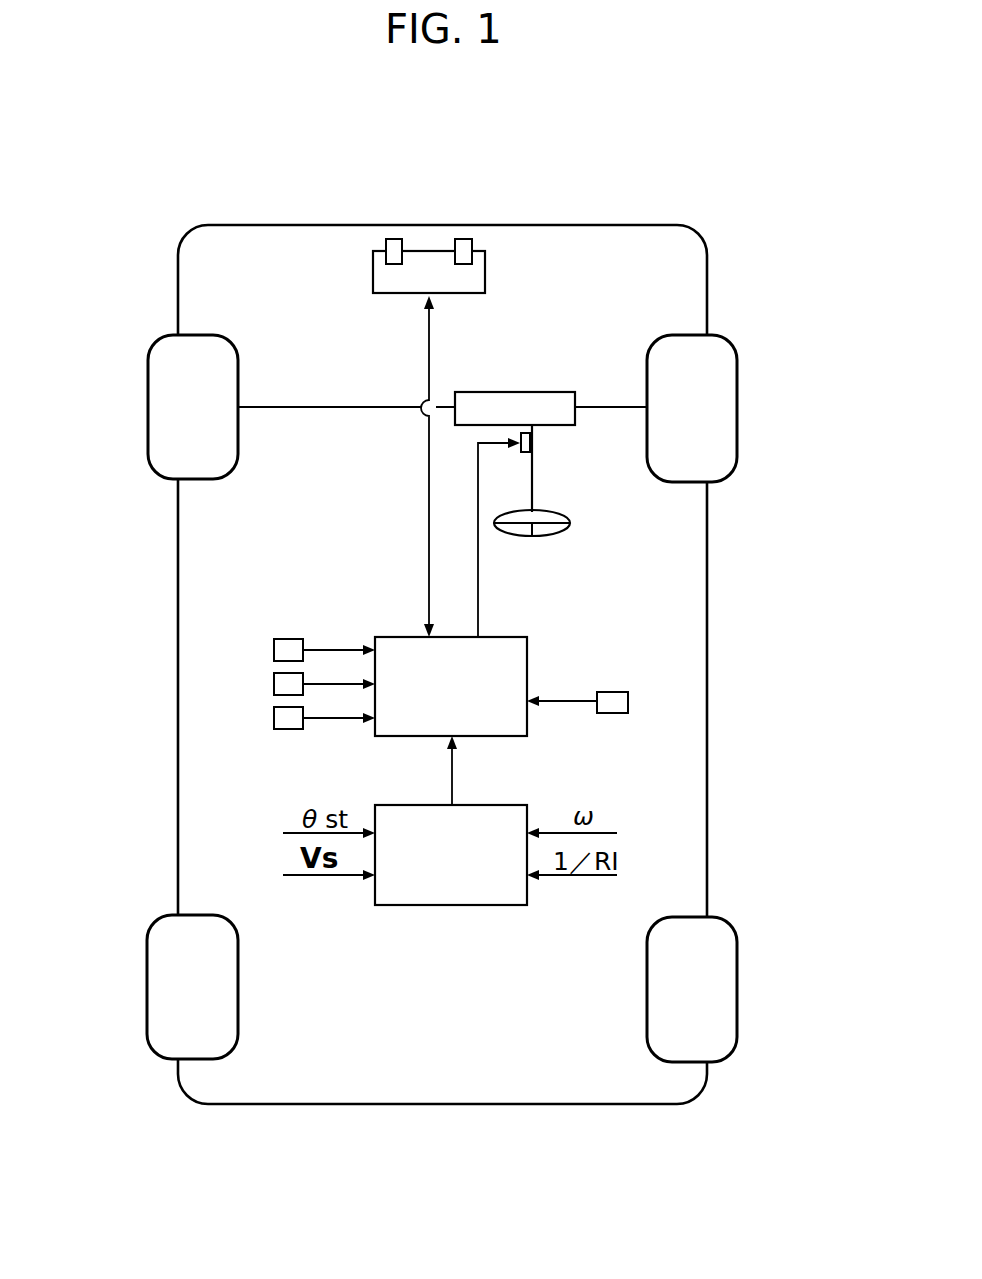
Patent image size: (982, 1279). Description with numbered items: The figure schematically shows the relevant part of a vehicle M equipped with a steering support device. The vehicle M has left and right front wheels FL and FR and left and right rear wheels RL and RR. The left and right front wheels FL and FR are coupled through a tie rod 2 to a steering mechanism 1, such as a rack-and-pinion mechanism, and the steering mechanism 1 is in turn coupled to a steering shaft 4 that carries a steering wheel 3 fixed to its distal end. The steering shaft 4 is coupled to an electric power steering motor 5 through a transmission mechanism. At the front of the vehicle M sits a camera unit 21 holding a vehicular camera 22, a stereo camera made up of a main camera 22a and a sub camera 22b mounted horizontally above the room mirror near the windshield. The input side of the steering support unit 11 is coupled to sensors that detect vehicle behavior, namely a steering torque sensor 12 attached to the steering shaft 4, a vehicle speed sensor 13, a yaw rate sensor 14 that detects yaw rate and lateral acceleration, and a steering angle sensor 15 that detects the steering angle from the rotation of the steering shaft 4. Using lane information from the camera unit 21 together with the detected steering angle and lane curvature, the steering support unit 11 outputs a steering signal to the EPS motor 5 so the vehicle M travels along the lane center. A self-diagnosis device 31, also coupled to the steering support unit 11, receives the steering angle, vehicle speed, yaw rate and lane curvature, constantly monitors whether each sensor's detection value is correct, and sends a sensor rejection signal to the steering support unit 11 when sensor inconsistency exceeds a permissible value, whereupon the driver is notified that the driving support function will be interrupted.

The steering mechanism 1 is at (517, 392).
The tie rod 2 is at (308, 405).
The steering wheel 3 is at (538, 537).
The steering shaft 4 is at (530, 485).
The electric power steering (EPS) motor 5 is at (531, 445).
The steering support unit 11 is at (390, 737).
The steering torque sensor 12 is at (274, 650).
The vehicle speed sensor 13 is at (274, 684).
The yaw rate sensor 14 is at (274, 718).
The steering angle sensor 15 is at (628, 701).
The camera unit 21 is at (373, 272).
The vehicular camera 22 is at (426, 193).
The main camera 22a is at (462, 238).
The sub camera 22b is at (393, 238).
The self-diagnosis device 31 is at (390, 906).
The vehicle M is at (612, 198).
The left front wheel FL is at (148, 396).
The right front wheel FR is at (738, 410).
The left rear wheel RL is at (147, 975).
The right rear wheel RR is at (738, 990).